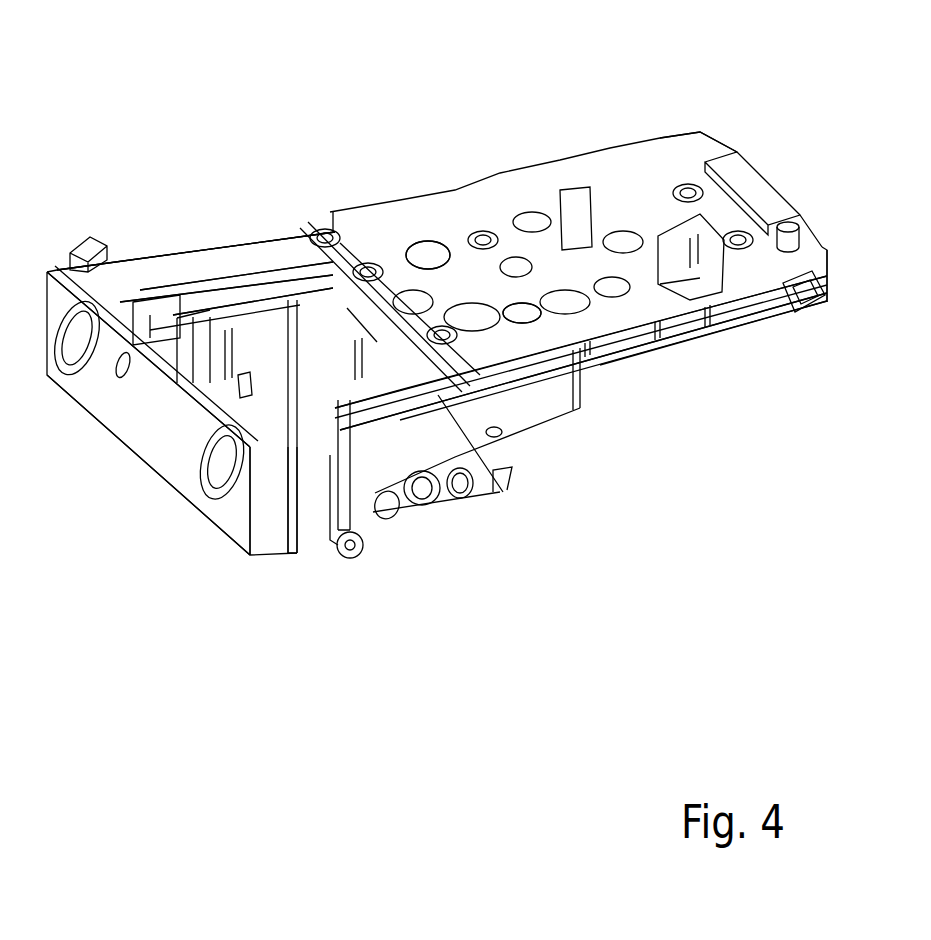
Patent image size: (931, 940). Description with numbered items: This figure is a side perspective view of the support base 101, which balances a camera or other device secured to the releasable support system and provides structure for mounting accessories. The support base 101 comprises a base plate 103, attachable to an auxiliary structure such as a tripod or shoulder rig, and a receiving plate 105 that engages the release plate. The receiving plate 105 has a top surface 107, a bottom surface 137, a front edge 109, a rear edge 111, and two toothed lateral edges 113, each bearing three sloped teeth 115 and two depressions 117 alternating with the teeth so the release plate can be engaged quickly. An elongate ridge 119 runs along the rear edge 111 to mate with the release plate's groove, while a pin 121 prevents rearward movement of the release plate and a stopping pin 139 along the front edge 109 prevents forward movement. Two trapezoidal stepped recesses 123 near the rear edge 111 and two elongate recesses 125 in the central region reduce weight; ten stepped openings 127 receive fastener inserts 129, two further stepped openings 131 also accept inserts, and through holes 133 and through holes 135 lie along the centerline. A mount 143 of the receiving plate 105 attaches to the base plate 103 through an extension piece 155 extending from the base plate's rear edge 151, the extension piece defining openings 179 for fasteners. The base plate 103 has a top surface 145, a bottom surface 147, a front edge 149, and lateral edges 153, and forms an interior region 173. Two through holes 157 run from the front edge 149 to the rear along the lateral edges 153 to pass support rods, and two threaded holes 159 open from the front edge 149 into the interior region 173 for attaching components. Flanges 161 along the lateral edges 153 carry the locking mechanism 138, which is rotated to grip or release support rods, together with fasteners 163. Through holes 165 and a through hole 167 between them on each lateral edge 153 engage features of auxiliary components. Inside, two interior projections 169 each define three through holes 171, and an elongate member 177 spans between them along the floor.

The support base 101 is at (325, 70).
The base plate 103 is at (150, 222).
The receiving plate 105 is at (697, 115).
The top surface 107 is at (508, 362).
The front edge 109 is at (312, 262).
The rear edge 111 is at (822, 247).
The lateral edges 113 is at (456, 190).
The teeth 115 is at (757, 320).
The depressions 117 is at (697, 337).
The elongate ridge 119 is at (748, 172).
The pin 121 is at (790, 220).
The stepped recesses 123 is at (703, 275).
The elongate recesses 125 is at (512, 252).
The stepped openings 127 is at (523, 318).
The fastener inserts 129 is at (560, 303).
The stepped openings 131 is at (407, 272).
The through holes 133 is at (578, 250).
The through holes 135 is at (625, 243).
The bottom surface 137 is at (366, 332).
The locking mechanism 138 is at (345, 570).
The stopping pin 139 is at (325, 225).
The mount 143 is at (358, 352).
The top surface 145 is at (367, 392).
The bottom surface 147 is at (467, 512).
The front edge 149 is at (238, 517).
The rear edge 151 is at (258, 240).
The lateral edges 153 is at (195, 240).
The extension piece 155 is at (583, 407).
The through holes 157 is at (212, 465).
The threaded holes 159 is at (125, 383).
The flanges 161 is at (337, 443).
The fasteners 163 is at (305, 553).
The through holes 165 is at (388, 517).
The through hole 167 is at (428, 505).
The interior projections 169 is at (180, 318).
The through holes 171 is at (242, 312).
The interior region 173 is at (232, 352).
The elongate member 177 is at (238, 383).
The openings 179 is at (505, 433).